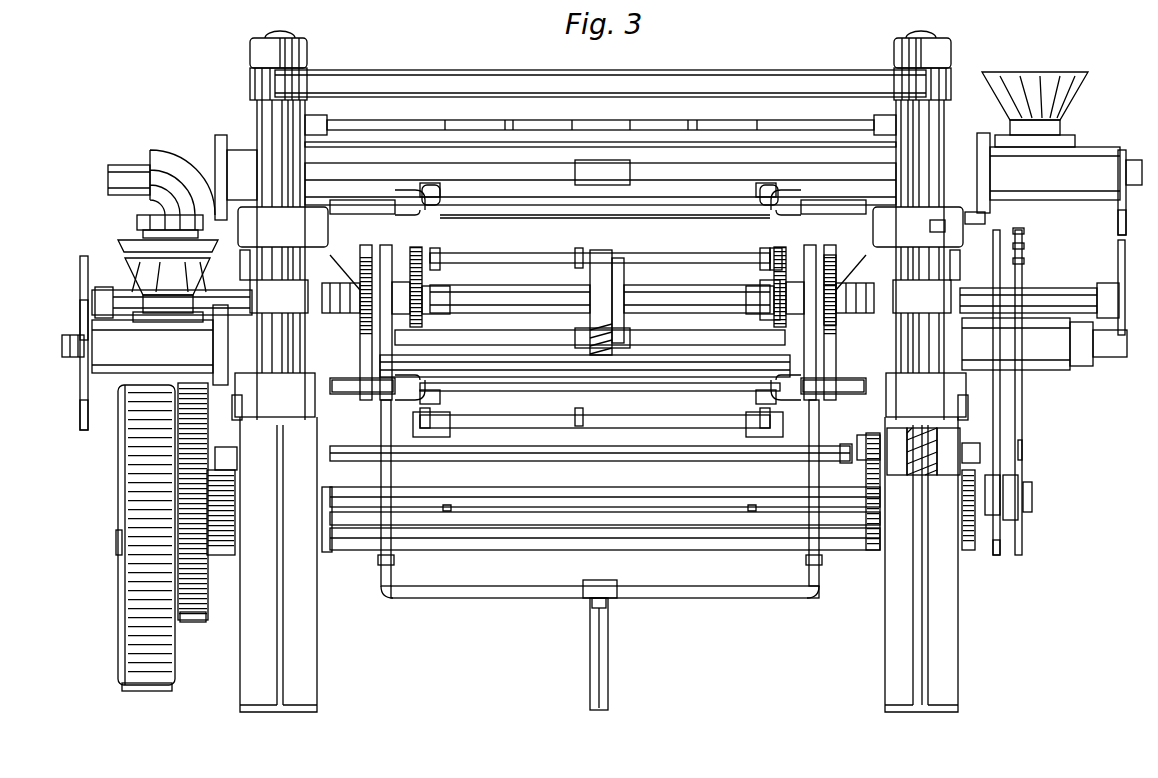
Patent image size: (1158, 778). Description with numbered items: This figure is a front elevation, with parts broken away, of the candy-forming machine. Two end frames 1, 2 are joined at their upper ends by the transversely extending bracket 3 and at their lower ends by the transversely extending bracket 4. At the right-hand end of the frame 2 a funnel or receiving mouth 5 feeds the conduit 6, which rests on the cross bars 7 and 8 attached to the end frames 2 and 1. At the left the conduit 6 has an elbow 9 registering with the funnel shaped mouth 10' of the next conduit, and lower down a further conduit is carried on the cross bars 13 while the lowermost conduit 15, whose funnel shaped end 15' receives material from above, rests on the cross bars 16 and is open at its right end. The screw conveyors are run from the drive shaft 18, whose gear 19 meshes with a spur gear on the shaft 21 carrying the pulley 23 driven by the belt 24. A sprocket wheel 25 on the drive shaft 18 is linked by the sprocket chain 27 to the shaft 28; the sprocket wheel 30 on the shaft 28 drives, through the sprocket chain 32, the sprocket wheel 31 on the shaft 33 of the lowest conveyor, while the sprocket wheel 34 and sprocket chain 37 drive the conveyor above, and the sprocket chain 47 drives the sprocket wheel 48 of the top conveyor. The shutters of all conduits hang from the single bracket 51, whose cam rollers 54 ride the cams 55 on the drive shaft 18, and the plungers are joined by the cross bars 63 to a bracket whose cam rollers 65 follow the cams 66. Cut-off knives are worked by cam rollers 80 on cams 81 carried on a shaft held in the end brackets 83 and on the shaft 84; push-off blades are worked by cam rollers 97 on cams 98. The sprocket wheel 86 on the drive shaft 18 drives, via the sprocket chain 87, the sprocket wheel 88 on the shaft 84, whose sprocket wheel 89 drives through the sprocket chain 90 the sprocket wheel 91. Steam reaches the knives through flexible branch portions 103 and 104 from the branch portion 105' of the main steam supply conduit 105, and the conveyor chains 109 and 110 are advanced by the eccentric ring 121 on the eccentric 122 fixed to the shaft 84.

The end frame 1 is at (280, 667).
The end frame 2 is at (933, 625).
The transversely extending bracket 3 is at (686, 72).
The transversely extending bracket 4 is at (687, 461).
The funnel or receiving mouth 5 is at (1003, 70).
The conduit 6 is at (230, 147).
The cross bar 7 is at (970, 220).
The cross bar 8 is at (200, 197).
The elbow 9 is at (163, 190).
The funnel shaped mouth 10' is at (136, 269).
The cross bar 13 is at (247, 248).
The lower conduit 15 is at (609, 352).
The funnel shaped end 15' is at (115, 235).
The cross bar 16 is at (236, 408).
The drive shaft 18 is at (506, 490).
The gear 19 is at (192, 618).
The shaft 21 is at (458, 540).
The pulley 23 is at (118, 507).
The belt 24 is at (137, 687).
The sprocket wheel 25 is at (1023, 537).
The sprocket chain 27 is at (1023, 447).
The shaft 28 is at (113, 292).
The sprocket wheel 30 is at (73, 273).
The sprocket wheel 31 is at (73, 393).
The sprocket chain 32 is at (85, 322).
The shaft 33 is at (62, 343).
The sprocket wheel 34 is at (1114, 275).
The sprocket chain 37 is at (1120, 253).
The sprocket chain 47 is at (1120, 227).
The sprocket wheel 48 is at (1120, 148).
The bracket 51 is at (620, 114).
The cam roller 54 is at (868, 462).
The cam 55 is at (345, 553).
The cross bar 63 is at (537, 147).
The cam roller 65 is at (203, 463).
The cam 66 is at (237, 558).
The cam roller 80 is at (825, 300).
The cam 81 is at (828, 275).
The end bracket 83 is at (263, 228).
The shaft 84 is at (707, 305).
The sprocket wheel 86 is at (996, 558).
The sprocket chain 87 is at (1013, 410).
The sprocket wheel 88 is at (1002, 333).
The sprocket wheel 89 is at (1020, 262).
The sprocket chain 90 is at (1022, 247).
The sprocket wheel 91 is at (1020, 233).
The cam roller 97 is at (763, 315).
The cam 98 is at (777, 250).
The flexible branch portion 103 is at (389, 424).
The flexible branch portion 104 is at (815, 418).
The main steam supply conduit 105 is at (578, 645).
The branch portion 105' is at (600, 575).
The conveyor chain 109 is at (565, 257).
The conveyor chain 110 is at (567, 418).
The eccentric ring 121 is at (598, 257).
The eccentric 122 is at (587, 320).